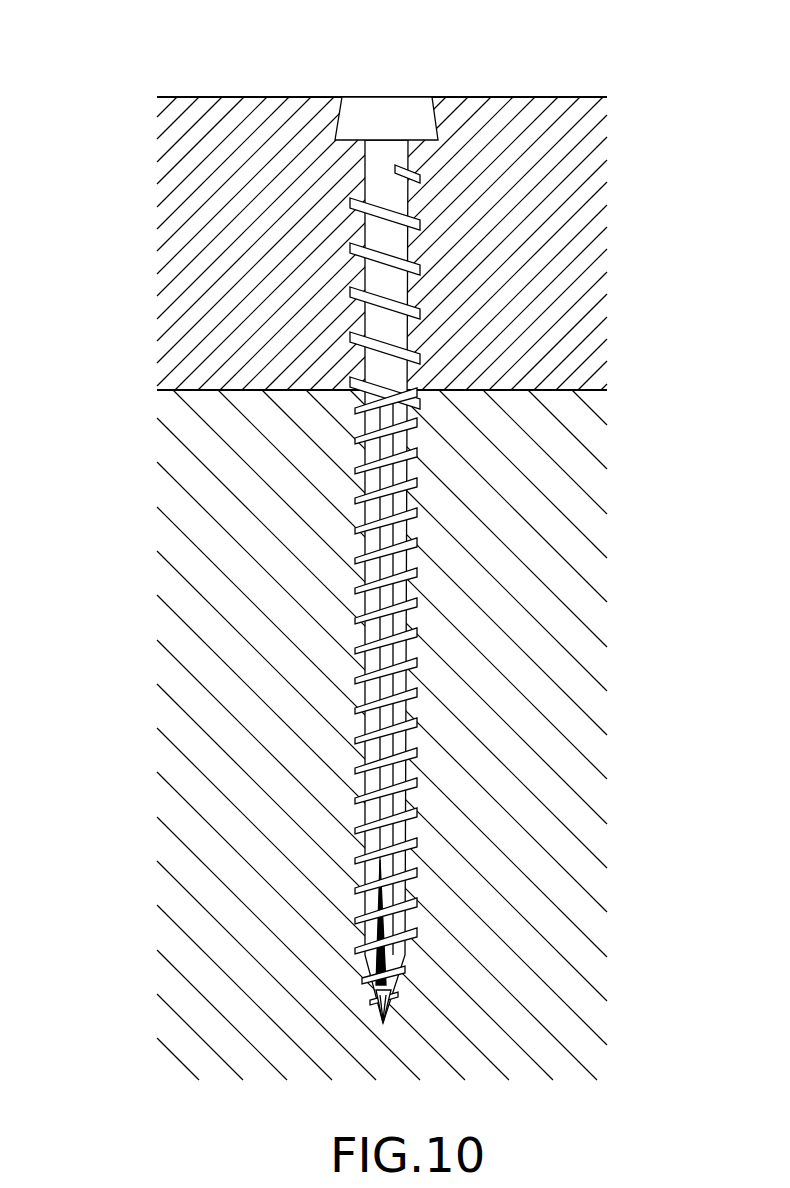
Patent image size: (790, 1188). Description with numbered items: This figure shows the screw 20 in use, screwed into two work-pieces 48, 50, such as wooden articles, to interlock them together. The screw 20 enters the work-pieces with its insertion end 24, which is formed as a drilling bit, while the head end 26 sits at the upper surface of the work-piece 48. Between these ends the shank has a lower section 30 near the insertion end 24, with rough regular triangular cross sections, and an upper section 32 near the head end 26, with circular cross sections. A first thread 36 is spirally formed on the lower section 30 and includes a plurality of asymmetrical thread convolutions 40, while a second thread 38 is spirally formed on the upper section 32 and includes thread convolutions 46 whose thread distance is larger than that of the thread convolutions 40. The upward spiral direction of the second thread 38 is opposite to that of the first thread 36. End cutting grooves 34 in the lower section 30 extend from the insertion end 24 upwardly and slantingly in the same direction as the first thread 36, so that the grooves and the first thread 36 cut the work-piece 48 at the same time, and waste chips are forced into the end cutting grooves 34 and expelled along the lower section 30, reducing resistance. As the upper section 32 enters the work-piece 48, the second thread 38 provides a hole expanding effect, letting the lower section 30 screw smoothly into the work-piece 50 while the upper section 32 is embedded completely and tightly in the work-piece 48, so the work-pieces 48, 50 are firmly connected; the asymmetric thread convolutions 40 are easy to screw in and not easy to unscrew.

The screw 20 is at (379, 527).
The insertion end 24 is at (397, 1005).
The head end 26 is at (382, 97).
The lower section 30 is at (410, 612).
The upper section 32 is at (400, 234).
The end cutting groove 34 is at (400, 914).
The first thread 36 is at (365, 742).
The second thread 38 is at (408, 347).
The thread convolutions 40 is at (415, 573).
The thread convolutions 46 is at (407, 290).
The work-piece 48 is at (205, 283).
The work-piece 50 is at (187, 545).